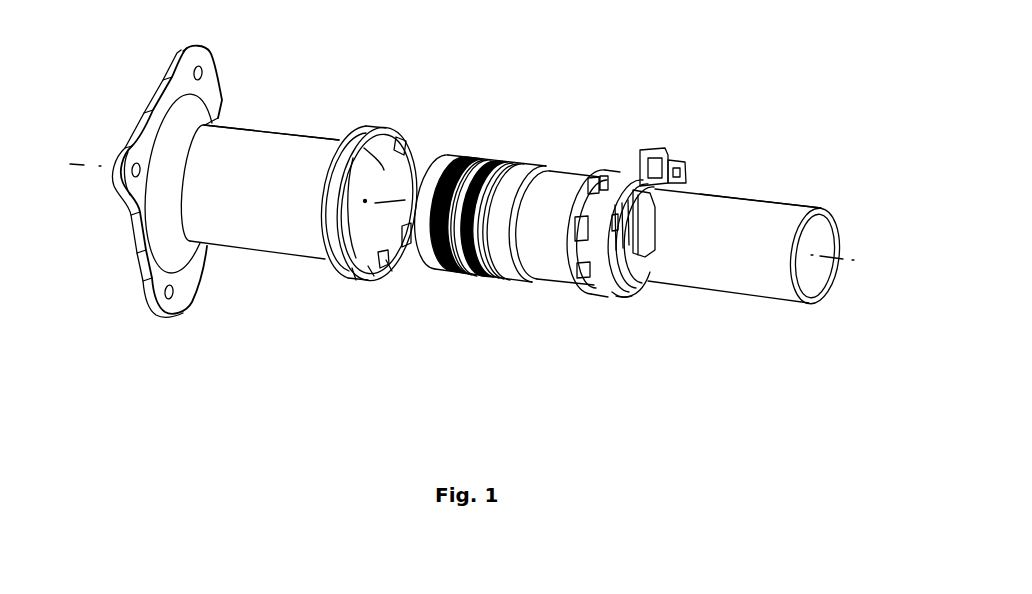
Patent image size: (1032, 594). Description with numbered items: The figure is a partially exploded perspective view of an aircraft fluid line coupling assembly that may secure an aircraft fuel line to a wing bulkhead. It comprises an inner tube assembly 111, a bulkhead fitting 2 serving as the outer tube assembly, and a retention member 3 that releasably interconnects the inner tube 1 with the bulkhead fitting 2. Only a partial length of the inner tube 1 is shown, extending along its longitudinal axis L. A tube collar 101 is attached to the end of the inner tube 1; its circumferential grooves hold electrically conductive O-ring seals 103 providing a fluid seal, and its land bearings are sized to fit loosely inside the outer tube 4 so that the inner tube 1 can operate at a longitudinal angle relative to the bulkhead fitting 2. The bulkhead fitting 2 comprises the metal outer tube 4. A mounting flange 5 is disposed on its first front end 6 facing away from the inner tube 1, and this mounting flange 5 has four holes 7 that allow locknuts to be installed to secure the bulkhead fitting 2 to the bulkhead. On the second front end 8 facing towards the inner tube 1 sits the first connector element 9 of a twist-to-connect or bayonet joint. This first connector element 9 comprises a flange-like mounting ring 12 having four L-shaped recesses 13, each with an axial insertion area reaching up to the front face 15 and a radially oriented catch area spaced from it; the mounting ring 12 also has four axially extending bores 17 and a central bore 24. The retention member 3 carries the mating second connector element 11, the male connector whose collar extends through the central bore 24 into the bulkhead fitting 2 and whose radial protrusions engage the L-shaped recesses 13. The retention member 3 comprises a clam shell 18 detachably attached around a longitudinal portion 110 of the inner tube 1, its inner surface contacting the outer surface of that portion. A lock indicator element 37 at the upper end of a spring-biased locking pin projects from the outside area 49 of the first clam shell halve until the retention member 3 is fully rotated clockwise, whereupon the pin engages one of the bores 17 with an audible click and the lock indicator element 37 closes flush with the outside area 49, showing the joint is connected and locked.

The inner tube 1 is at (772, 285).
The inner tube assembly 111 is at (760, 198).
The longitudinal axis L is at (890, 265).
The bulkhead fitting 2 is at (303, 126).
The outer tube 4 is at (247, 240).
The mounting flange 5 is at (148, 247).
The first front end 6 is at (213, 121).
The holes 7 is at (134, 165).
The second front end 8 is at (348, 133).
The central bore 24 is at (375, 186).
The L-shaped recesses 13 is at (405, 165).
The axially extending bores 17 is at (348, 212).
The first connector element 9 is at (353, 280).
The mounting ring 12 is at (372, 276).
The front face 15 is at (390, 271).
The tube collar 101 is at (507, 280).
The O-ring seals 103 is at (433, 262).
The retention member 3 is at (652, 224).
The longitudinal portion 110 is at (577, 177).
The second connector element 11 is at (590, 287).
The clam shell 18 is at (623, 303).
The lock indicator element 37 is at (680, 187).
The outside area 49 is at (683, 188).